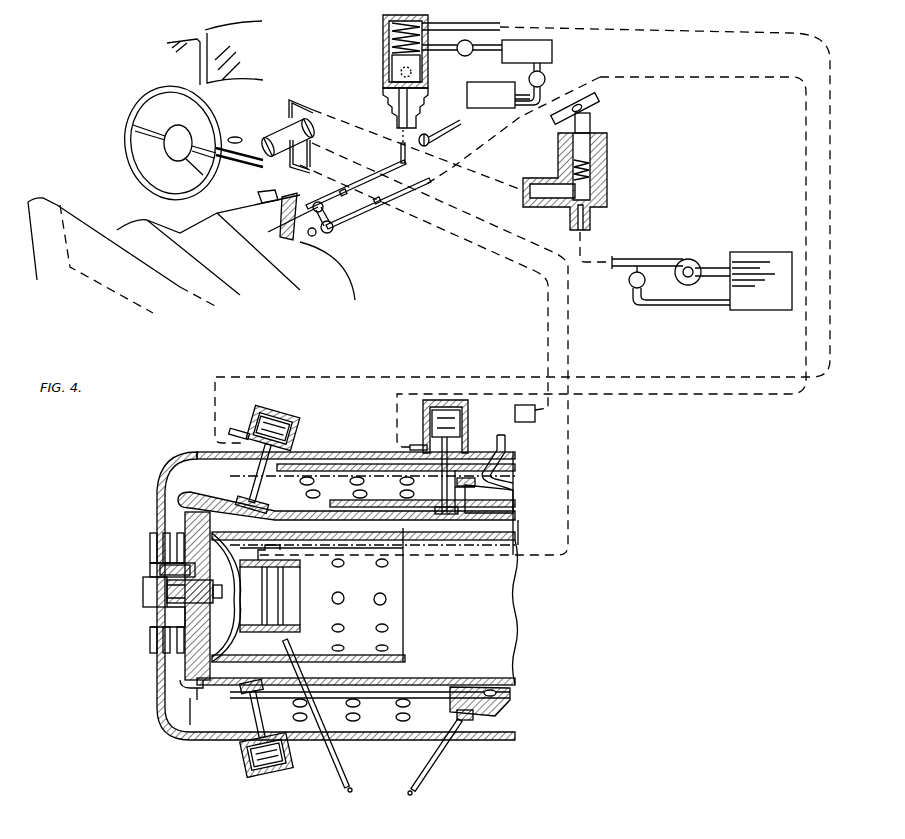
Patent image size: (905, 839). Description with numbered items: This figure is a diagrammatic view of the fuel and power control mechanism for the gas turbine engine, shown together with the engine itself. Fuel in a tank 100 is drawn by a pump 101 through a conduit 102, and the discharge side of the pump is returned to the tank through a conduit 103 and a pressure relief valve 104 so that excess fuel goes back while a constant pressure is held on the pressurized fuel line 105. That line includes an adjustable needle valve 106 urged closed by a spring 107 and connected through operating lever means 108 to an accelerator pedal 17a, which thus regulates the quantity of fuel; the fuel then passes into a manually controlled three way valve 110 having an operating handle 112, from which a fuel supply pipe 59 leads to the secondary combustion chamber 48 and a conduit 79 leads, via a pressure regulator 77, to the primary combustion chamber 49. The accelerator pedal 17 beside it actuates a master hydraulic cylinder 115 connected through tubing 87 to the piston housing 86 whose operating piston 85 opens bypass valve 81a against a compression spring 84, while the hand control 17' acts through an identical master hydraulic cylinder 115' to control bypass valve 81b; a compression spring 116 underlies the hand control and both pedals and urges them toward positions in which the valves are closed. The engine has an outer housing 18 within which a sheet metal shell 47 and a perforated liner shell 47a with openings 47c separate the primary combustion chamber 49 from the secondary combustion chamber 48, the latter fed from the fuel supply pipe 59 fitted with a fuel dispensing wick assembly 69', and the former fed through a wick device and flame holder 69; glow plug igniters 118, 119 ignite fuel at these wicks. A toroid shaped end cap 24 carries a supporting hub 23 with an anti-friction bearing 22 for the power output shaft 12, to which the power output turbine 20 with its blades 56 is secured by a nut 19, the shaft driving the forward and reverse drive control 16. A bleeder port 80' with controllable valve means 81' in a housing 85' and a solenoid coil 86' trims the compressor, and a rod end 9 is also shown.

The forward and reverse drive control 16 is at (242, 137).
The manually controlled three way valve 110 is at (290, 99).
The operating handle 112 is at (272, 172).
The accelerator pedal 17 is at (262, 216).
The compression spring 116 is at (290, 233).
The accelerator pedal 17a is at (332, 232).
The operating lever means 108 is at (393, 206).
The master hydraulic cylinder 115 is at (447, 89).
The master hydraulic cylinder 115' is at (483, 87).
The hand control 17' is at (443, 135).
The pressurized fuel line 105 is at (478, 178).
The spring 107 is at (592, 165).
The adjustable needle valve 106 is at (607, 193).
The fuel supply pipe 59 is at (515, 240).
The conduit 79 is at (500, 254).
The pump 101 is at (688, 258).
The conduit 102 is at (740, 266).
The pressure relief valve 104 is at (628, 284).
The conduit 103 is at (683, 306).
The tank 100 is at (762, 311).
The tubing 87 is at (452, 377).
The piston housing 86 is at (368, 401).
The compression spring 84 is at (293, 412).
The operating piston 85 is at (393, 435).
The pressure regulator 77 is at (530, 424).
The toroid shaped end cap 24 is at (158, 485).
The bypass valve 81a is at (265, 504).
The primary combustion chamber 49 is at (398, 484).
The bypass valve 81b is at (452, 516).
The anti-friction bearing 22 is at (150, 569).
The power output shaft 12 is at (143, 591).
The nut 19 is at (194, 603).
The secondary combustion chamber 48 is at (362, 573).
The fuel dispensing wick assembly 69' is at (285, 588).
The openings 47c is at (386, 599).
The supporting hub 23 is at (155, 629).
The power output turbine 20 is at (197, 653).
The perforated liner shell 47a is at (405, 657).
The sheet metal shell 47 is at (500, 683).
The blades 56 is at (183, 688).
The controllable valve means 81' is at (231, 706).
The bleeder port 80' is at (277, 699).
The housing 85' is at (250, 729).
The solenoid coil 86' is at (302, 771).
The outer housing 18 is at (362, 741).
The wick device and flame holder 69 is at (482, 740).
The glow plug igniter 118 is at (345, 790).
The glow plug igniter 119 is at (415, 773).
The rod end 9 is at (375, 798).